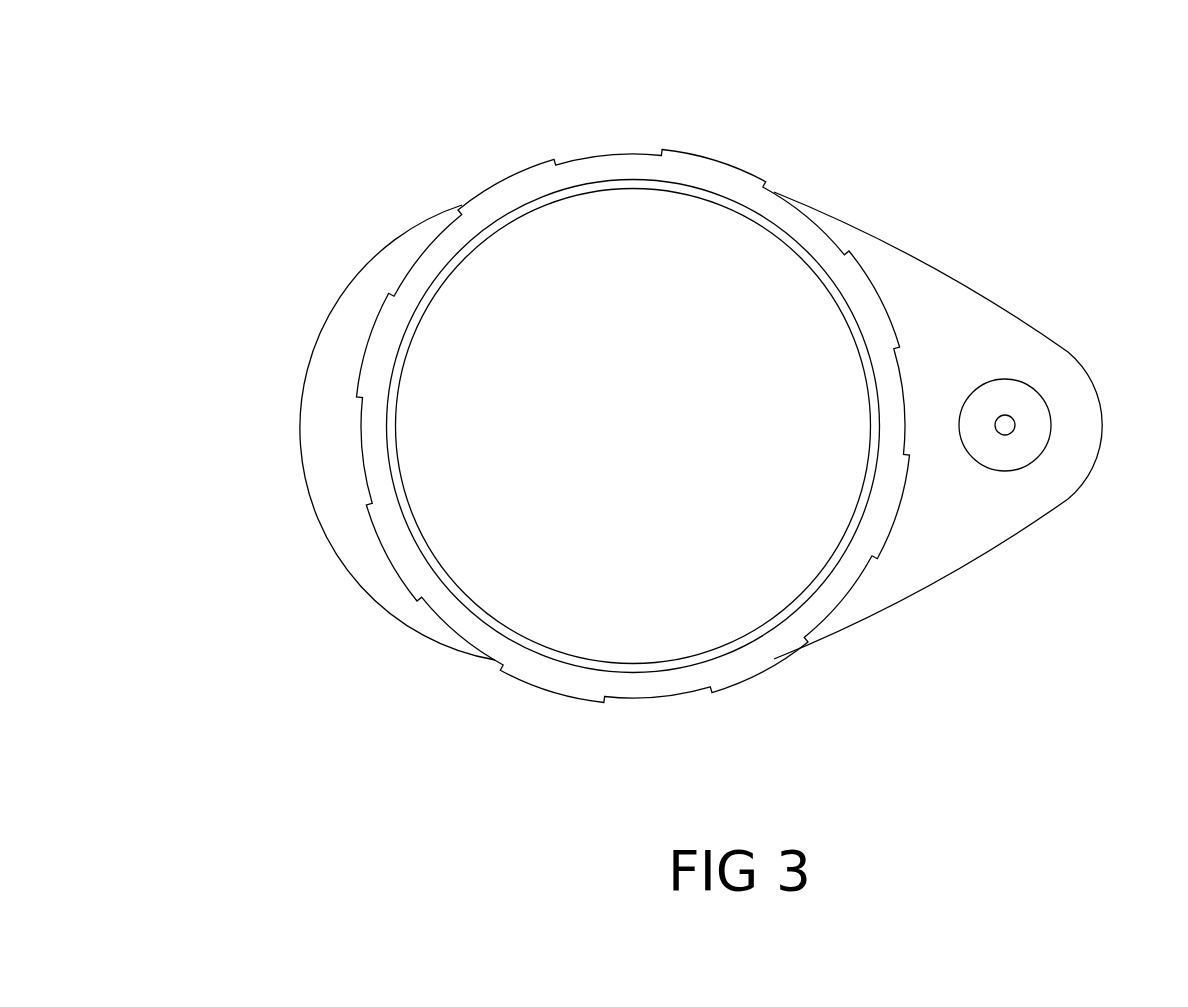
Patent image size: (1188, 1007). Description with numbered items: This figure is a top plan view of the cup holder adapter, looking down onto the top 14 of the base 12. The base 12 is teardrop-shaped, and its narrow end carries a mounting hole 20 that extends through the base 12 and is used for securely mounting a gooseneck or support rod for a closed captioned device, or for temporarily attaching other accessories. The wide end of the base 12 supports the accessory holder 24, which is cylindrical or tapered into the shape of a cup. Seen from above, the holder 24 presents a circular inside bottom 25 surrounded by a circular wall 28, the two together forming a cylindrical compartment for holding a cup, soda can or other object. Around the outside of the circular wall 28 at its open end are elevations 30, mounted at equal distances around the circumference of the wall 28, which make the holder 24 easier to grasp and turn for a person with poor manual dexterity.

The base 12 is at (937, 582).
The top 14 is at (328, 443).
The mounting hole 20 is at (1012, 418).
The accessory holder 24 is at (589, 396).
The circular inside bottom 25 is at (632, 427).
The circular wall 28 is at (722, 180).
The elevations 30 is at (548, 692).